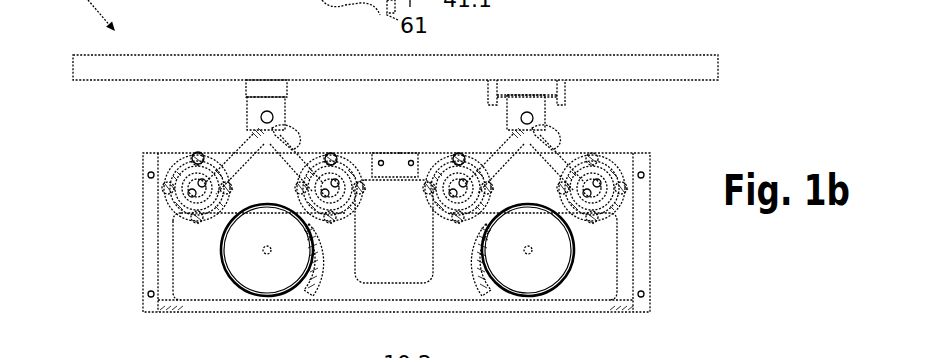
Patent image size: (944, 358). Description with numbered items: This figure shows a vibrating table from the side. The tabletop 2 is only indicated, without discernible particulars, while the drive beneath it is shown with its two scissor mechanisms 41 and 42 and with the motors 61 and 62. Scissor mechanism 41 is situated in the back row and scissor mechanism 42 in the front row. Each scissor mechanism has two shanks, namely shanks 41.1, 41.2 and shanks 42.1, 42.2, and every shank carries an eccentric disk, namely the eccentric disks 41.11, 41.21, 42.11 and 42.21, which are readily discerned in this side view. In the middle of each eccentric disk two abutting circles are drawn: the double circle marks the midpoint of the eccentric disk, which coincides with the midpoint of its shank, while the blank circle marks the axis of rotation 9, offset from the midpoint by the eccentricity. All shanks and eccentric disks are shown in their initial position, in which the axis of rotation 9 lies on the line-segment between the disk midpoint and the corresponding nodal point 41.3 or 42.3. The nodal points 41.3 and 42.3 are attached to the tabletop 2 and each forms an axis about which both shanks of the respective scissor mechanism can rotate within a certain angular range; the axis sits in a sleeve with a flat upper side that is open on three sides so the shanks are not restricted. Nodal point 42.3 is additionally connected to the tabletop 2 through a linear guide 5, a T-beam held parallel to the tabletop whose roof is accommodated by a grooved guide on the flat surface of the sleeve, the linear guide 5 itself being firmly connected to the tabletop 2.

The tabletop 2 is at (170, 68).
The linear guide 5 is at (562, 80).
The axis of rotation 9 is at (190, 156).
The scissor mechanism 41 is at (138, 201).
The shank 41.1 is at (230, 152).
The eccentric disk 41.11 is at (148, 175).
The shank 41.2 is at (307, 147).
The eccentric disk 41.21 is at (352, 152).
The nodal point 41.3 is at (266, 110).
The scissor mechanism 42 is at (628, 231).
The shank 42.1 is at (500, 143).
The eccentric disk 42.11 is at (470, 152).
The shank 42.2 is at (570, 145).
The eccentric disk 42.21 is at (641, 172).
The nodal point 42.3 is at (526, 111).
The motor 61 is at (260, 277).
The motor 62 is at (522, 273).